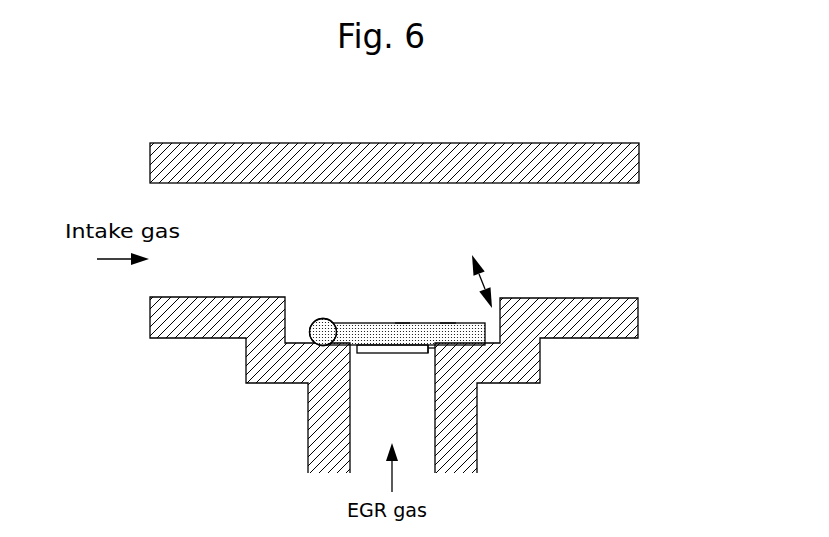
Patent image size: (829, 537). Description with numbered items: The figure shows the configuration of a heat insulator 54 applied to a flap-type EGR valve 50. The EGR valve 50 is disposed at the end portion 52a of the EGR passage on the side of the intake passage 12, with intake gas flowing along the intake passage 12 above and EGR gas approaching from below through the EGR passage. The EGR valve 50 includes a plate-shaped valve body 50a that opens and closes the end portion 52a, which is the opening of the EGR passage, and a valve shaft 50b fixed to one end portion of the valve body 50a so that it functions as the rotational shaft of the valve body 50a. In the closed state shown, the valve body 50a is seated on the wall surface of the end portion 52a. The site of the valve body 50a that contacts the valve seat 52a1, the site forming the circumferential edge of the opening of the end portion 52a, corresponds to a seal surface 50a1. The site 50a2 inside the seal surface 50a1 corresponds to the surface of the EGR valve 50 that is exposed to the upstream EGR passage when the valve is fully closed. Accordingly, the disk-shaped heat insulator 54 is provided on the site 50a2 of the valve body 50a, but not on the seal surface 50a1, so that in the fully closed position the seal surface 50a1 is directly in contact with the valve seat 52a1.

The intake passage 12 is at (596, 200).
The EGR valve 50 is at (374, 270).
The valve body 50a is at (439, 215).
The seal surface 50a1 is at (448, 323).
The site inside the seal surface 50a2 is at (402, 323).
The valve shaft 50b is at (322, 348).
The end portion of the EGR passage 52a is at (450, 360).
The valve seat 52a1 is at (448, 357).
The heat insulator 54 is at (412, 350).